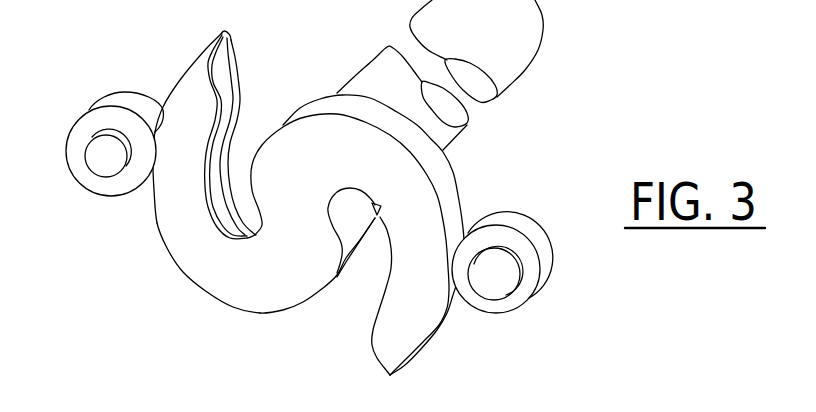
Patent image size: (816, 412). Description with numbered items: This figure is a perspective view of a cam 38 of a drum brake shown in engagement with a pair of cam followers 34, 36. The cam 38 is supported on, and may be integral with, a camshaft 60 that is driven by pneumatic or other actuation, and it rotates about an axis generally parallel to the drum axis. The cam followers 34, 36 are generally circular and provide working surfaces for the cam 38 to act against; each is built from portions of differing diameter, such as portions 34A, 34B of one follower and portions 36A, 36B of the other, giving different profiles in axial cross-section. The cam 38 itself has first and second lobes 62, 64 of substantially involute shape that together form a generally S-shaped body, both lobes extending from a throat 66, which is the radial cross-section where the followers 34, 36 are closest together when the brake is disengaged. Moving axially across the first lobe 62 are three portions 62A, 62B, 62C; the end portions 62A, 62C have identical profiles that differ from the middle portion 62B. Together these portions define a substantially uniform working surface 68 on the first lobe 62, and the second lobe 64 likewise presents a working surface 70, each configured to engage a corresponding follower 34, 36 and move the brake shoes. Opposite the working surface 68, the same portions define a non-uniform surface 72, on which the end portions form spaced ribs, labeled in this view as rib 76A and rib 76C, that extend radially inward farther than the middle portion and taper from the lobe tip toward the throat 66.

The cam follower 34 is at (95, 147).
The portion of cam follower 34A is at (93, 153).
The portion of cam follower 34B is at (89, 113).
The cam follower 36 is at (530, 260).
The portion of cam follower 36A is at (500, 275).
The portion of cam follower 36B is at (523, 217).
The cam 38 is at (317, 187).
The camshaft 60 is at (528, 27).
The first lobe 62 is at (197, 119).
The portion of first lobe 62A is at (216, 59).
The portion of first lobe 62B is at (220, 53).
The portion of first lobe 62C is at (227, 32).
The second lobe 64 is at (405, 339).
The throat 66 is at (298, 214).
The working surface 68 is at (190, 66).
The working surface 70 is at (443, 315).
The non-uniform surface 72 is at (213, 150).
The rib 76A is at (175, 204).
The third surface 76C is at (219, 201).